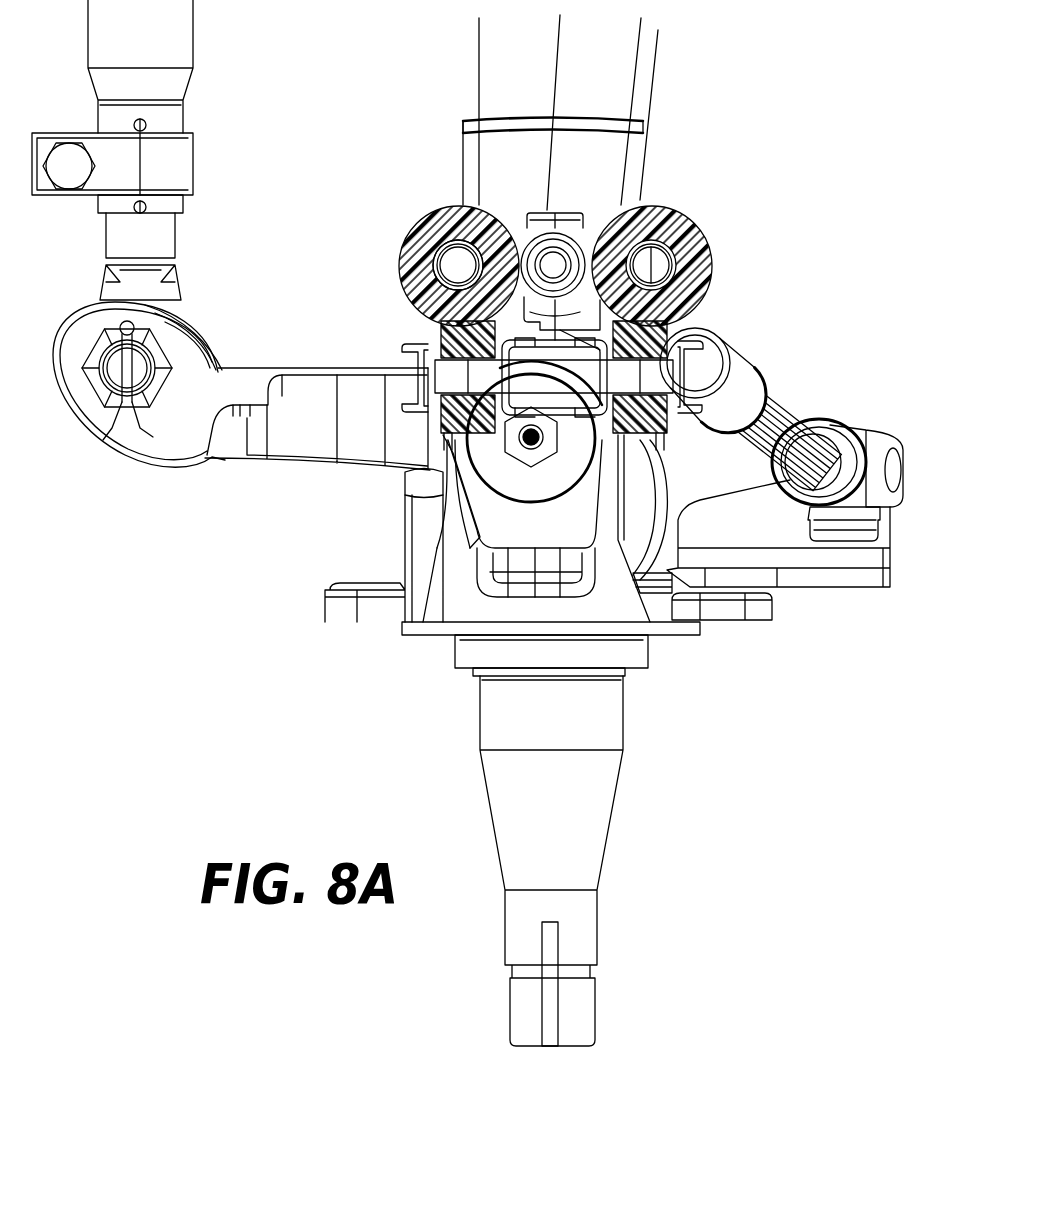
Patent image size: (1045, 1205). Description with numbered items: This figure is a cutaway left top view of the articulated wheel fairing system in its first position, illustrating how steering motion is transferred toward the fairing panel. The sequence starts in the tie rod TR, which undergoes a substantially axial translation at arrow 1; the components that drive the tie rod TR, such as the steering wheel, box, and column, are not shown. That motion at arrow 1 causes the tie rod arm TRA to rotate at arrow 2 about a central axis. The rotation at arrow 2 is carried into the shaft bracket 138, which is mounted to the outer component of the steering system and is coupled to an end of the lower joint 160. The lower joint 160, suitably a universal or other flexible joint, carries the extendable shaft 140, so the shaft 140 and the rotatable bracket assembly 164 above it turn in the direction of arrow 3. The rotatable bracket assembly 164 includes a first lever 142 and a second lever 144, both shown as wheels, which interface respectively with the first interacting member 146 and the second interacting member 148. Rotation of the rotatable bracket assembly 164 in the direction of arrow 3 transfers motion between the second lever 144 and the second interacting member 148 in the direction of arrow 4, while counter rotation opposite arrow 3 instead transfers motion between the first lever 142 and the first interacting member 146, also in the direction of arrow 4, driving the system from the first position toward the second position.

The arrow 1 is at (209, 147).
The arrow 2 is at (572, 503).
The arrow 3 is at (536, 246).
The arrow 4 is at (457, 362).
The tie rod TR is at (114, 232).
The tie rod arm TRA is at (324, 370).
The shaft bracket 138 is at (812, 560).
The extendable shaft 140 is at (742, 360).
The first lever 142 is at (698, 228).
The second lever 144 is at (440, 214).
The first interacting member 146 is at (686, 331).
The second interacting member 148 is at (440, 328).
The lower joint 160 is at (892, 447).
The rotatable bracket assembly 164 is at (401, 281).